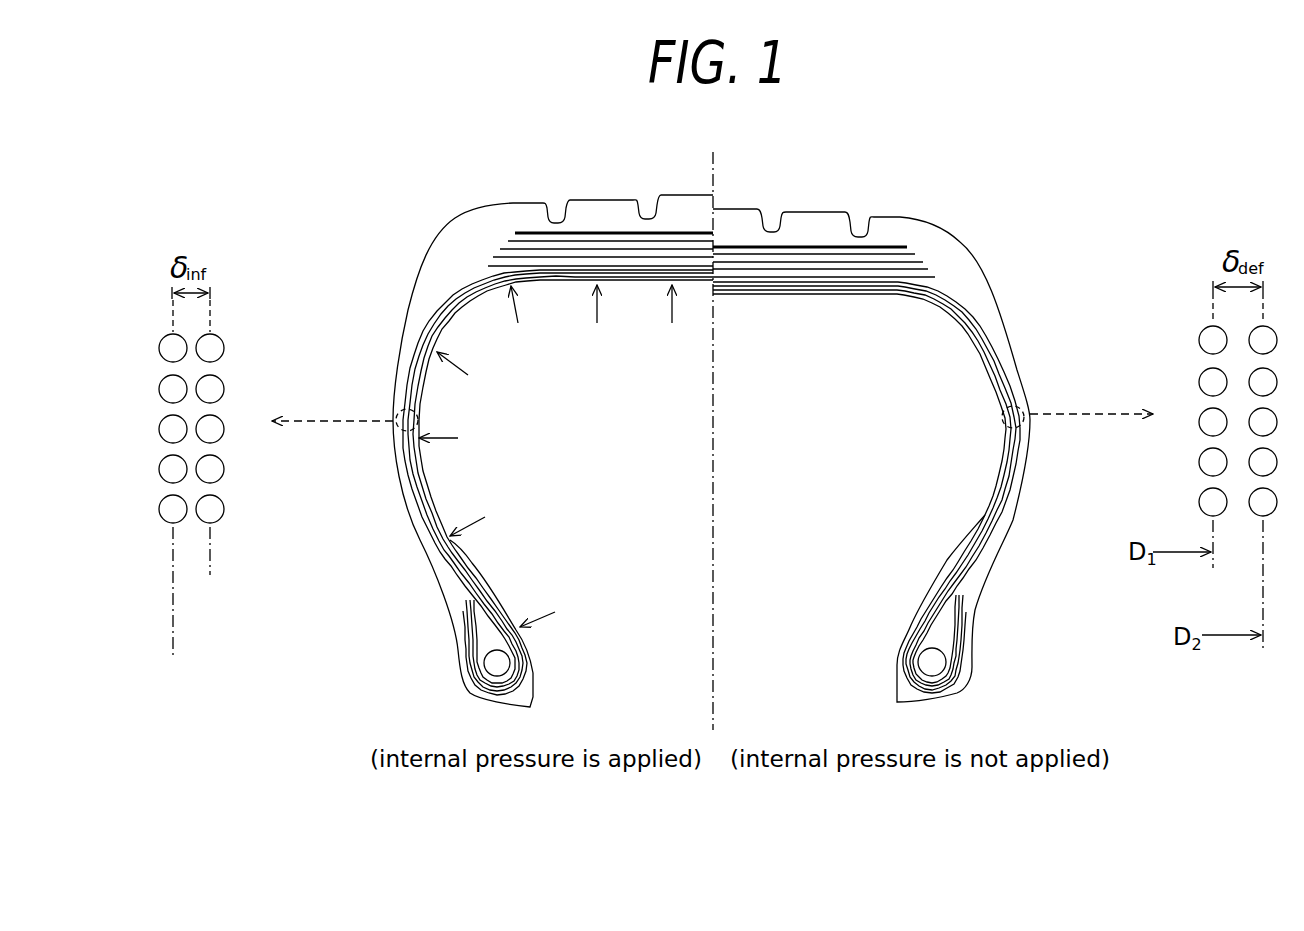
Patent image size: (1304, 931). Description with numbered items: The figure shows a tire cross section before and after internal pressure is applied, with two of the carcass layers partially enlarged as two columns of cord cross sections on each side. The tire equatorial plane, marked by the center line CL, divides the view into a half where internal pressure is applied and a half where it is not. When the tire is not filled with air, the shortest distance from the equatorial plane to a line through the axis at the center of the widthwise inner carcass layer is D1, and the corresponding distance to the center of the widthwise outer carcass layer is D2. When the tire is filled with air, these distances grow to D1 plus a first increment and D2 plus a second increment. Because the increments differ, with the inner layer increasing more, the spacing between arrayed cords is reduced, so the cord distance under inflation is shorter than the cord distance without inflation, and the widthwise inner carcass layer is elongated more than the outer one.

The tire equatorial center line CL is at (715, 427).
The shortest distance from tire equatorial plane to center of widthwise inner carcas D1 is at (215, 560).
The shortest distance from tire equatorial plane to center of widthwise outer carcas D2 is at (178, 645).